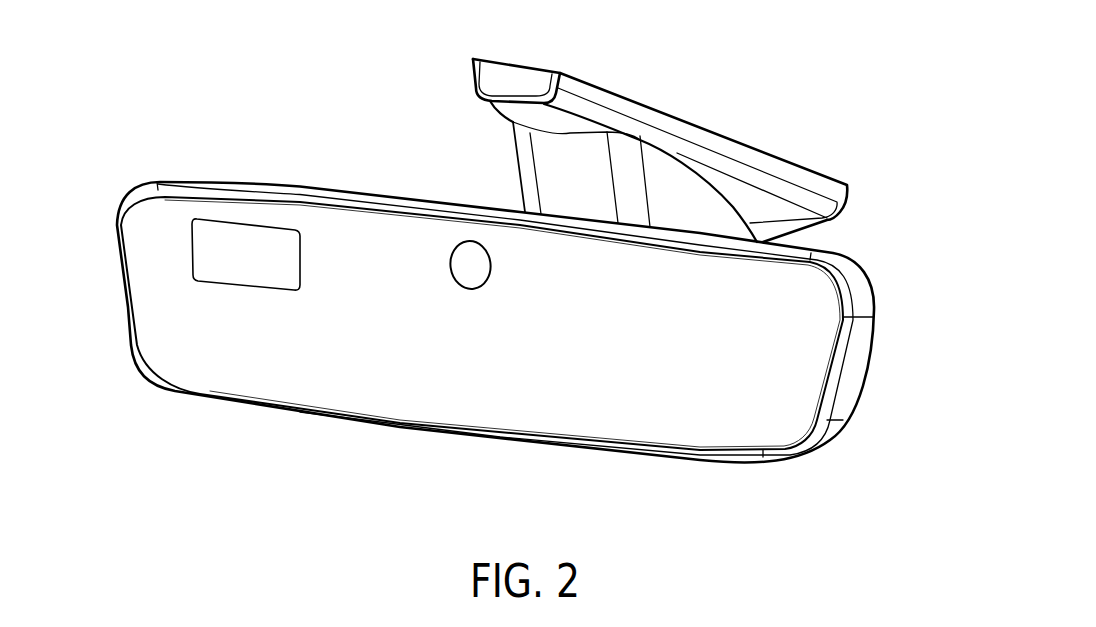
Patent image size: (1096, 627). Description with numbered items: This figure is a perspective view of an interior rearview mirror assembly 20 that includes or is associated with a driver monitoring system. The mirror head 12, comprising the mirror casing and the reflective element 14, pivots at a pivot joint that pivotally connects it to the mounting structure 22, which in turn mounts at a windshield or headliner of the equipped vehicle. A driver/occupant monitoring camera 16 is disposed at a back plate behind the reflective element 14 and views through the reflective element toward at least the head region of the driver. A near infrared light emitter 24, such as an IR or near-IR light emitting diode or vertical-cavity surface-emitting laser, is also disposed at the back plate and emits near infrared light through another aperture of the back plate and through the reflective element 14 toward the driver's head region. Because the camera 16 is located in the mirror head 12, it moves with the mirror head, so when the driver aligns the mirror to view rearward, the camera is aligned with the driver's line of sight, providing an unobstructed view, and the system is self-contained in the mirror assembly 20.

The mirror assembly 20 is at (876, 112).
The mirror head 12 is at (840, 430).
The reflective element 14 is at (400, 392).
The driver/occupant monitoring camera 16 is at (462, 270).
The mounting structure 22 is at (640, 98).
The near infrared light emitter 24 is at (223, 245).